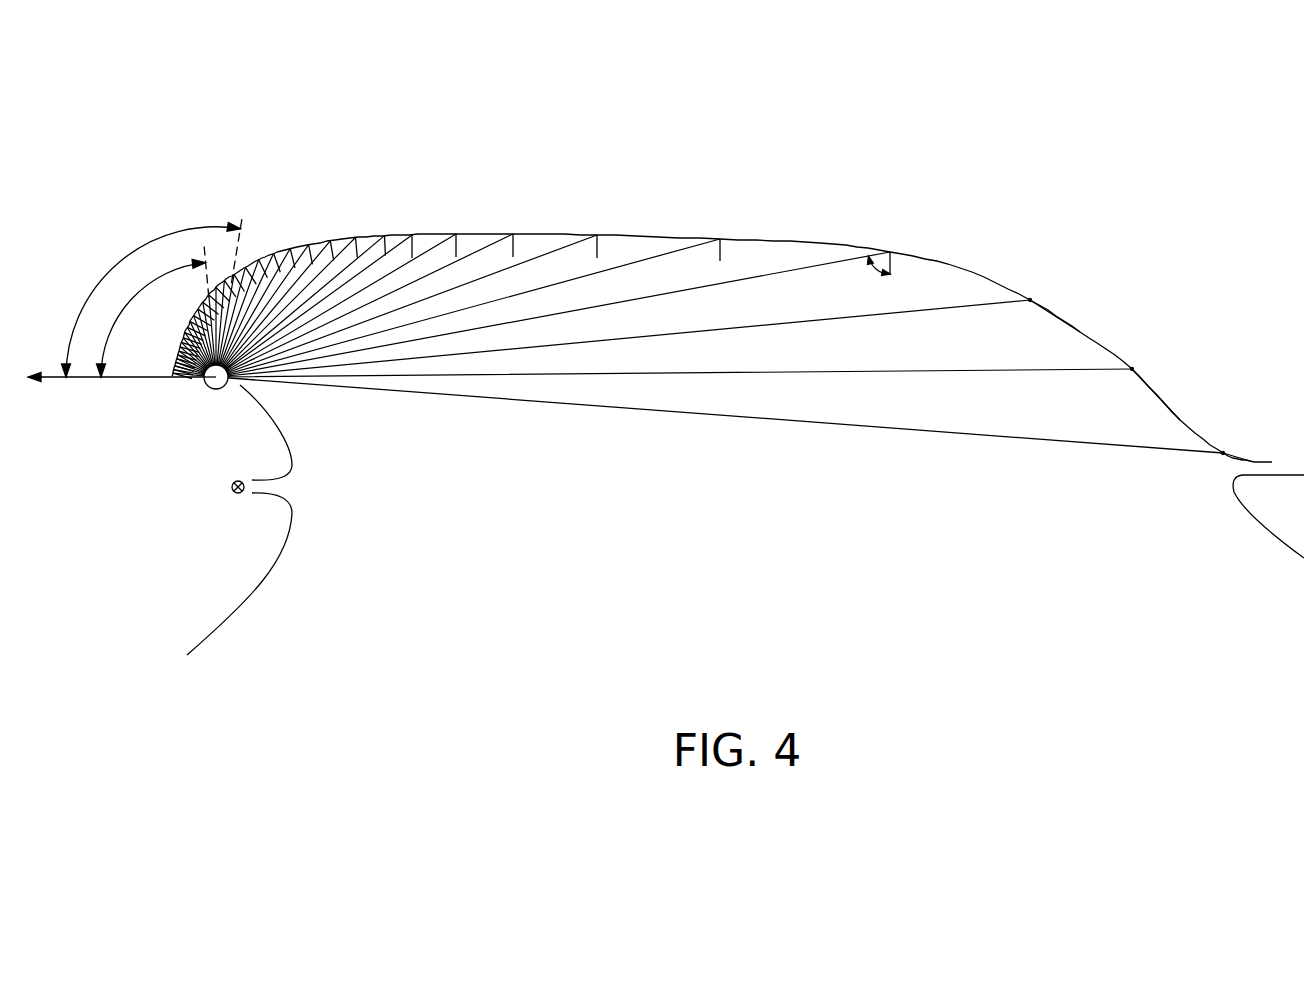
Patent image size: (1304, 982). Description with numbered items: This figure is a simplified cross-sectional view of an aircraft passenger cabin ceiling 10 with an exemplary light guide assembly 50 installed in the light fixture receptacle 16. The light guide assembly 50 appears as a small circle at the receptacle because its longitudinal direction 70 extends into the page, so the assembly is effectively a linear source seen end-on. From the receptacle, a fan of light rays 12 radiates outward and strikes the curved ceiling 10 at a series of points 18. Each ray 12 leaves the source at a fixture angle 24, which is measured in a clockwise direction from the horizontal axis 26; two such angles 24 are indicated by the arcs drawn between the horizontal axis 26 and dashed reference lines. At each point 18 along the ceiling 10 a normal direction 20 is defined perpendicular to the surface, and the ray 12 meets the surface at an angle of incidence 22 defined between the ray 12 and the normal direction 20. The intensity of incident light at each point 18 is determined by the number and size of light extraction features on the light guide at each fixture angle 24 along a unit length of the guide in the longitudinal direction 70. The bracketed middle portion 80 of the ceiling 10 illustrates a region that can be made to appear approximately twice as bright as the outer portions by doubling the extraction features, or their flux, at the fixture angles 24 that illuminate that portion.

The cabin ceiling 10 is at (960, 268).
The light rays 12 is at (673, 428).
The light fixture receptacle 16 is at (229, 397).
The point 18 is at (1030, 300).
The normal direction 20 is at (1021, 320).
The angle of incidence 22 is at (873, 268).
The fixture angle 24 is at (115, 266).
The horizontal axis 26 is at (87, 382).
The light guide assembly 50 is at (217, 391).
The longitudinal direction 70 is at (234, 496).
The middle portion 80 is at (412, 220).